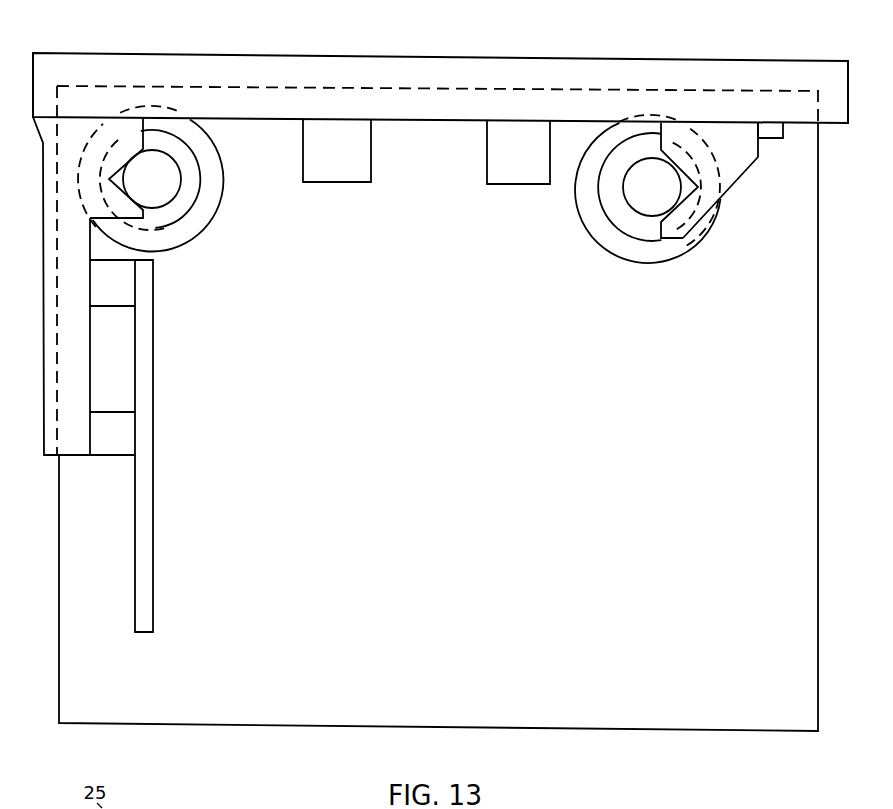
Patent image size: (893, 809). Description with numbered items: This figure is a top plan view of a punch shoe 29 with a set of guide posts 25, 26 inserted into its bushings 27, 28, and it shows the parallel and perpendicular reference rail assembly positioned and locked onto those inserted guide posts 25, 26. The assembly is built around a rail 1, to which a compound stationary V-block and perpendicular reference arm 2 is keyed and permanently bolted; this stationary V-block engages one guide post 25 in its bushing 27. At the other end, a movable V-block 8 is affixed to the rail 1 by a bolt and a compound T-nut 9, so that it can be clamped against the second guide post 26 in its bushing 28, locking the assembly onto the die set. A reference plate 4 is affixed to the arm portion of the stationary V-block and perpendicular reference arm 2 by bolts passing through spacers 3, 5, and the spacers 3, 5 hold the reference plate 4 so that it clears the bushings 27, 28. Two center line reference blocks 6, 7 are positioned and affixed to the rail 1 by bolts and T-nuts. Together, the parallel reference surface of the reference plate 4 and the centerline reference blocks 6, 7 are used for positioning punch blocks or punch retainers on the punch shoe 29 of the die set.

The rail 1 is at (426, 105).
The compound stationary V-block and perpendicular reference arm 2 is at (77, 420).
The spacer 3 is at (118, 435).
The reference plate 4 is at (143, 401).
The spacer 5 is at (118, 280).
The center line reference block 6 is at (329, 153).
The center line reference block 7 is at (530, 158).
The movable V-block 8 is at (728, 150).
The compound T-nut 9 is at (773, 130).
The guide post 25 is at (153, 179).
The guide post 26 is at (653, 188).
The bushing 27 is at (210, 182).
The bushing 28 is at (633, 242).
The punch shoe 29 is at (707, 692).